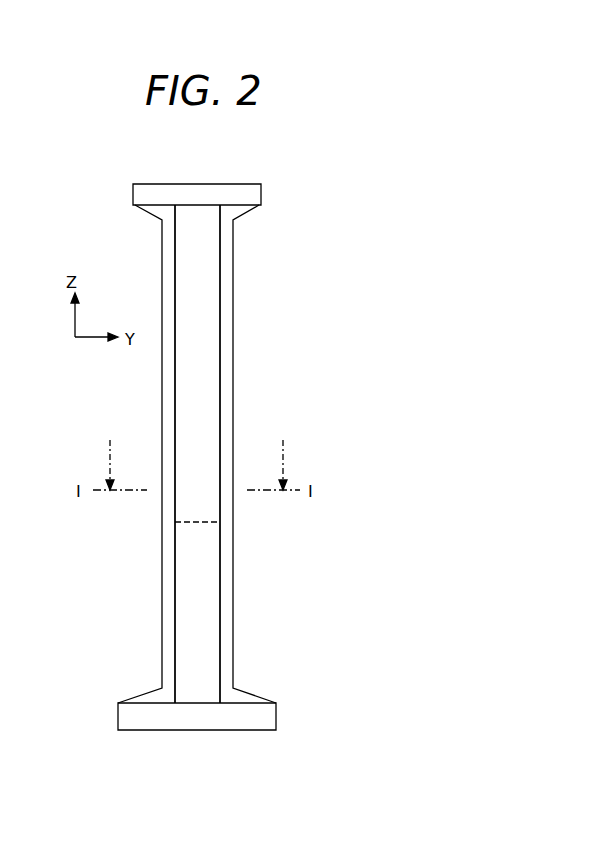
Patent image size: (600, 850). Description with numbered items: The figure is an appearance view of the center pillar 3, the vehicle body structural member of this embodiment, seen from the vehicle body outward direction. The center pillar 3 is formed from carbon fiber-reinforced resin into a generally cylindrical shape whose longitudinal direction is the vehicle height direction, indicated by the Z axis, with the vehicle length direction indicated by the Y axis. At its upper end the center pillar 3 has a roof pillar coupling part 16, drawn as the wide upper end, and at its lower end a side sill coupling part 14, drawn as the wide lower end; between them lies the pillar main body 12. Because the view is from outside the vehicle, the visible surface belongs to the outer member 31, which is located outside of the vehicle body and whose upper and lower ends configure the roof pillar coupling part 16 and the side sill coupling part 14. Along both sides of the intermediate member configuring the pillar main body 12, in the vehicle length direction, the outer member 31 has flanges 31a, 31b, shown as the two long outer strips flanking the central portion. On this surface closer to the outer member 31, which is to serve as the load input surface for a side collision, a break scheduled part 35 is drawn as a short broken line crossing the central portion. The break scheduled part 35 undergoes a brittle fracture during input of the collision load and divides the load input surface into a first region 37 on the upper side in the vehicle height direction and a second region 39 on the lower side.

The center pillar 3 is at (346, 657).
The pillar main body 12 is at (242, 298).
The side sill coupling part 14 is at (242, 728).
The roof pillar coupling part 16 is at (242, 187).
The outer member 31 is at (197, 454).
The flange 31a is at (170, 548).
The flange 31b is at (227, 547).
The break scheduled part 35 is at (203, 518).
The first region 37 is at (211, 444).
The second region 39 is at (210, 583).